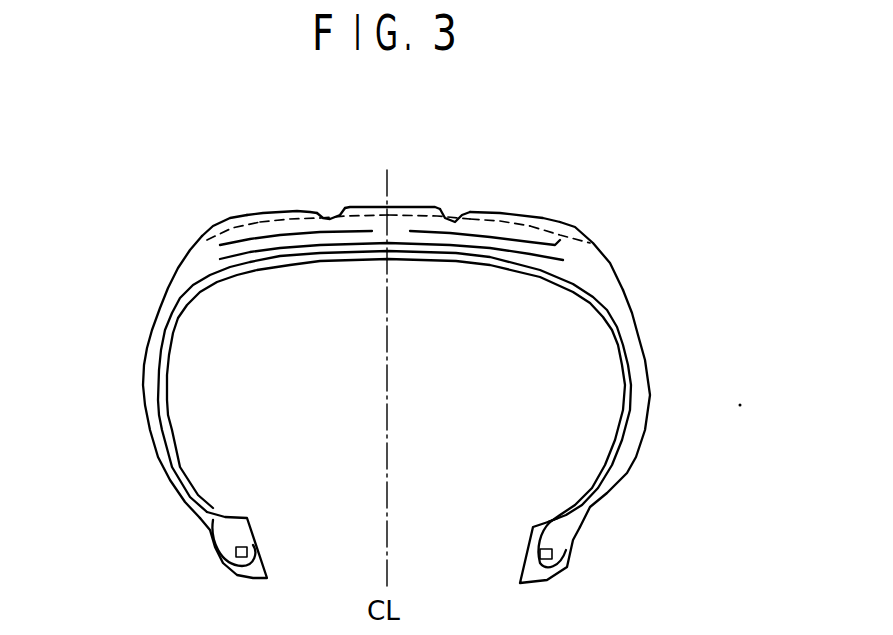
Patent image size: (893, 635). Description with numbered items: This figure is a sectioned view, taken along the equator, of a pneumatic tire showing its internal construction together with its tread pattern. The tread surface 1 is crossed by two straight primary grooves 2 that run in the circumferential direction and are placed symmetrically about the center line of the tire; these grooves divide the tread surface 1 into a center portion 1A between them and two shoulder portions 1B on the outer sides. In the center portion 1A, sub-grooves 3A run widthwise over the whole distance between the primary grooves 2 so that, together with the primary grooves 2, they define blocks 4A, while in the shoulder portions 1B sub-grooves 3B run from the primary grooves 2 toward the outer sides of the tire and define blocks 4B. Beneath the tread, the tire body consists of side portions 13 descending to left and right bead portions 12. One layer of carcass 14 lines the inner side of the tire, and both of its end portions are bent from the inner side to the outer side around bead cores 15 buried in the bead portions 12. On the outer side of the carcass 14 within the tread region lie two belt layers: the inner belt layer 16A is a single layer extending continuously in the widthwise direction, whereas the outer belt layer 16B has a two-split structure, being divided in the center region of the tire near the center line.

The tread surface 1 is at (547, 217).
The center portion 1A is at (412, 205).
The shoulder portions 1B is at (293, 208).
The primary grooves 2 is at (330, 213).
The sub-grooves 3A is at (362, 218).
The sub-grooves 3B is at (253, 213).
The blocks 4A is at (377, 214).
The blocks 4B is at (233, 222).
The bead portions 12 is at (210, 533).
The side portions 13 is at (146, 348).
The carcass 14 is at (183, 296).
The bead cores 15 is at (247, 552).
The inner belt layer 16A is at (543, 257).
The outer belt layer 16B is at (297, 237).